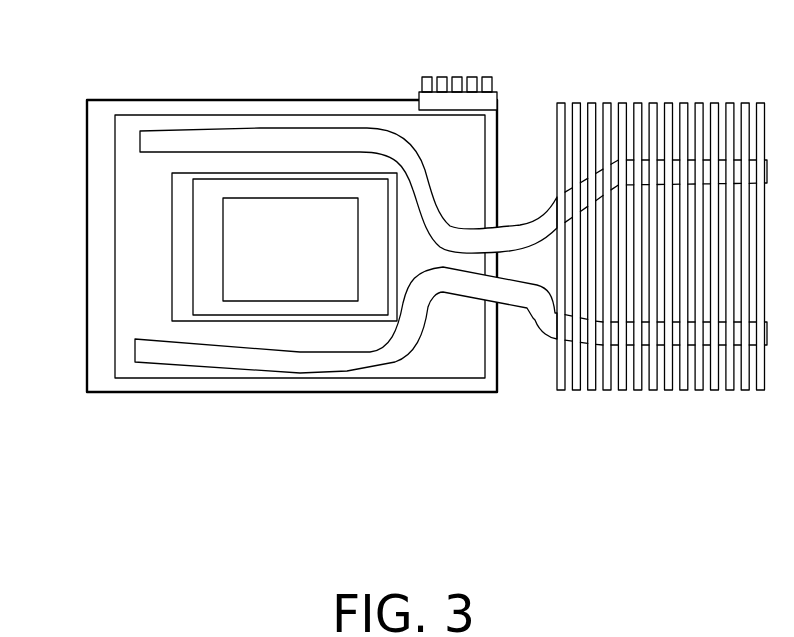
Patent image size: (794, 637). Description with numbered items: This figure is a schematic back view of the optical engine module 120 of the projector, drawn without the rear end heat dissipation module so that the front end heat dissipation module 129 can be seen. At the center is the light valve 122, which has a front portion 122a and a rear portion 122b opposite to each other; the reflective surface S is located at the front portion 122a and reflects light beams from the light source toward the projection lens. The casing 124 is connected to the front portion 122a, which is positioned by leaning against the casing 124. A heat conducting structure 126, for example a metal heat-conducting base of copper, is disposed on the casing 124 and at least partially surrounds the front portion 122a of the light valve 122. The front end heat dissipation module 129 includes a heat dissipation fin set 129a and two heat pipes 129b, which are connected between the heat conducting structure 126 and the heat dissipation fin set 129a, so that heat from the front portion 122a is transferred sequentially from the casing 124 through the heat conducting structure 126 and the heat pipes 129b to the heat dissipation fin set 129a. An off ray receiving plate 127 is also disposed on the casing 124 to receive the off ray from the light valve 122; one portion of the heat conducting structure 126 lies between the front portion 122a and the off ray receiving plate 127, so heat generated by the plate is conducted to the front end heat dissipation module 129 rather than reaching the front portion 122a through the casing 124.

The optical engine module 120 is at (63, 78).
The casing 124 is at (100, 155).
The heat conducting structure 126 is at (128, 200).
The off ray receiving plate 127 is at (458, 100).
The light valve 122 is at (423, 455).
The front portion 122a is at (333, 288).
The rear portion 122b is at (373, 297).
The reflective surface S is at (262, 225).
The front end heat dissipation module 129 is at (590, 455).
The heat dissipation fin set 129a is at (560, 392).
The heat pipe 129b is at (470, 250).